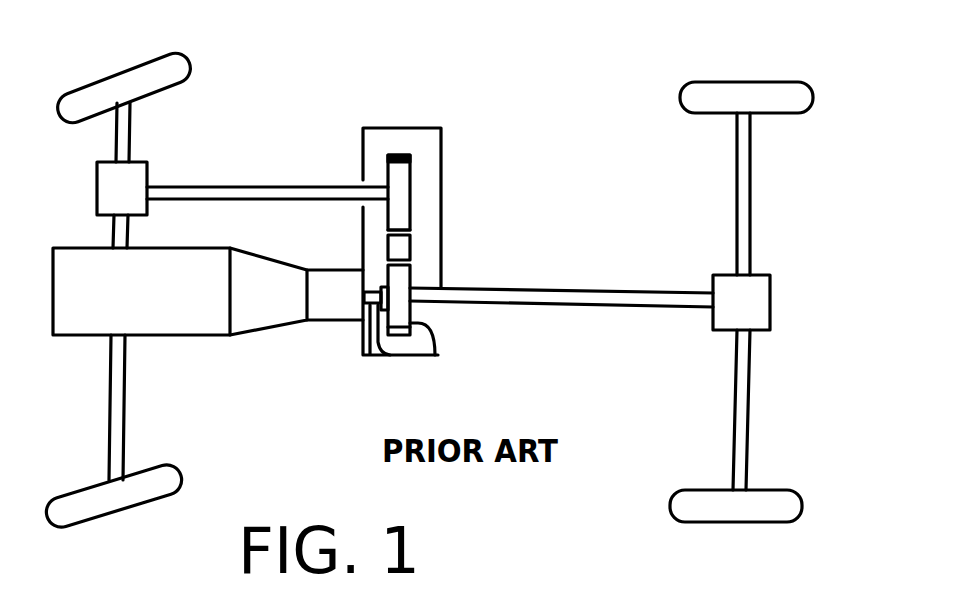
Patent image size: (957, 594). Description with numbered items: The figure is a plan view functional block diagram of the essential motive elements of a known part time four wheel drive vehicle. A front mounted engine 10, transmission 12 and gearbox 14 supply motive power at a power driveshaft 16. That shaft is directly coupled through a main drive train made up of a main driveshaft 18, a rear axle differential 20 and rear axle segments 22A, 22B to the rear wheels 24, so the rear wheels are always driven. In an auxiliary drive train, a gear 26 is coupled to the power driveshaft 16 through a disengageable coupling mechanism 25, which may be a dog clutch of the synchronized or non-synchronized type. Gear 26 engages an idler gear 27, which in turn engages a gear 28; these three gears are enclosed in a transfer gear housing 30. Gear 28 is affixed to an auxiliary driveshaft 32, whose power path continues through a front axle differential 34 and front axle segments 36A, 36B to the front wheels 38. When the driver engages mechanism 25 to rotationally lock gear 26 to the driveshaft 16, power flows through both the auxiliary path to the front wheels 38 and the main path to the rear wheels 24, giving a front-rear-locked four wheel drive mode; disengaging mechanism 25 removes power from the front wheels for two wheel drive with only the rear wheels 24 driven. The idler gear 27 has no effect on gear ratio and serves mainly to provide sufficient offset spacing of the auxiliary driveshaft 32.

The engine 10 is at (77, 247).
The transmission 12 is at (255, 330).
The gearbox 14 is at (330, 321).
The power driveshaft 16 is at (388, 356).
The main driveshaft 18 is at (675, 309).
The rear axle differential 20 is at (730, 274).
The rear axle segment 22A is at (736, 185).
The rear axle segment 22B is at (733, 420).
The rear wheels 24 is at (747, 82).
The disengageable coupling mechanism 25 is at (381, 290).
The gear 26 is at (437, 312).
The idler gear 27 is at (412, 245).
The gear 28 is at (412, 175).
The transfer gear housing 30 is at (418, 128).
The auxiliary driveshaft 32 is at (342, 187).
The front axle differential 34 is at (97, 186).
The front axle segment 36A is at (130, 149).
The front axle segment 36B is at (125, 413).
The front wheels 38 is at (147, 62).